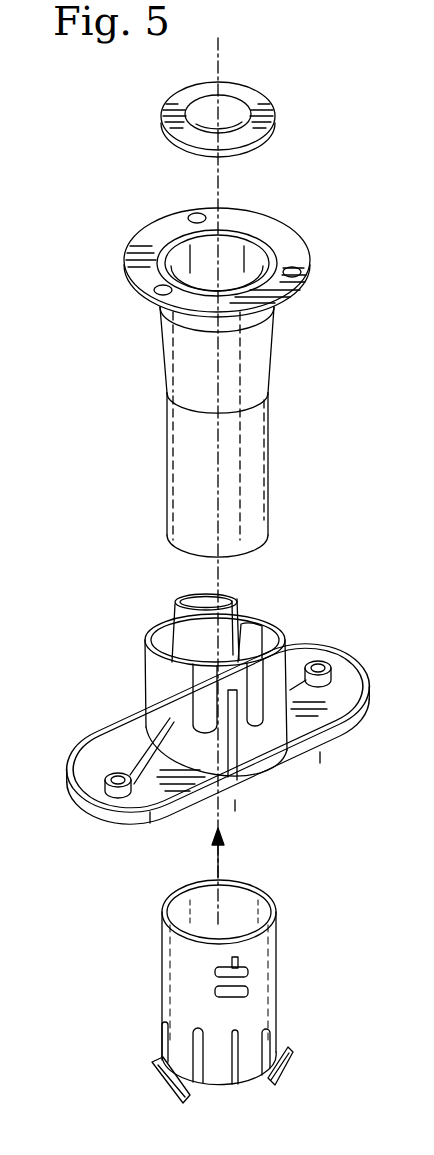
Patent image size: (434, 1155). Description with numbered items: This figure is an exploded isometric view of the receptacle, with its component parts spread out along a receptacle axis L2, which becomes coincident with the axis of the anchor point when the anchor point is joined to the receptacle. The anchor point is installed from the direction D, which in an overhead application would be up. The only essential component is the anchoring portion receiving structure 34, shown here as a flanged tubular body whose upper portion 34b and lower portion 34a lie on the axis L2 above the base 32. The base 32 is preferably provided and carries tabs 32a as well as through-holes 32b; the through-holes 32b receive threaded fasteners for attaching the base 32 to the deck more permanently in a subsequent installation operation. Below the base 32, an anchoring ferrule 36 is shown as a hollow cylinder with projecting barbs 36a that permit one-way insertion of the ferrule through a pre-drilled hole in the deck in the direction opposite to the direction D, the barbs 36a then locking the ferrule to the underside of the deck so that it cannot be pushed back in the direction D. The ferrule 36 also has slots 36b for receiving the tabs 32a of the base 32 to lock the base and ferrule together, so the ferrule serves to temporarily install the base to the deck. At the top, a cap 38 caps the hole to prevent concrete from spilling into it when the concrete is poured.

The base 32 is at (216, 712).
The tabs 32a is at (262, 632).
The through-holes 32b is at (118, 763).
The anchoring portion receiving structure 34 is at (206, 382).
The lower cylindrical portion of holder 34a is at (162, 474).
The upper tapered portion of holder 34b is at (160, 357).
The anchoring ferrule 36 is at (217, 1011).
The barbs 36a is at (176, 1090).
The slots 36b is at (250, 968).
The cap 38 is at (293, 123).
The receptacle axis L2 is at (222, 44).
The direction D is at (222, 857).